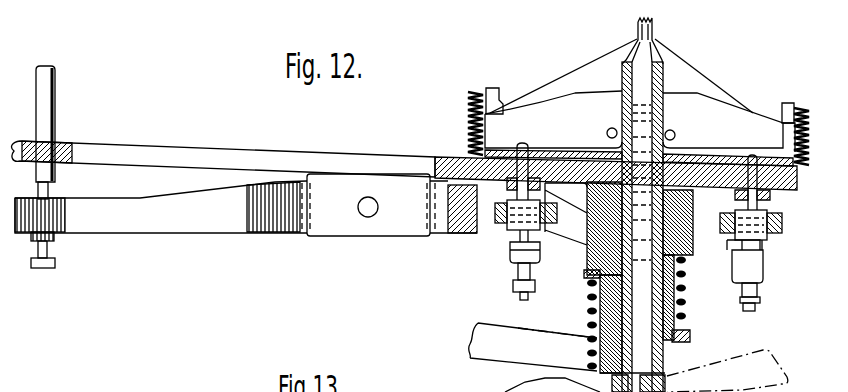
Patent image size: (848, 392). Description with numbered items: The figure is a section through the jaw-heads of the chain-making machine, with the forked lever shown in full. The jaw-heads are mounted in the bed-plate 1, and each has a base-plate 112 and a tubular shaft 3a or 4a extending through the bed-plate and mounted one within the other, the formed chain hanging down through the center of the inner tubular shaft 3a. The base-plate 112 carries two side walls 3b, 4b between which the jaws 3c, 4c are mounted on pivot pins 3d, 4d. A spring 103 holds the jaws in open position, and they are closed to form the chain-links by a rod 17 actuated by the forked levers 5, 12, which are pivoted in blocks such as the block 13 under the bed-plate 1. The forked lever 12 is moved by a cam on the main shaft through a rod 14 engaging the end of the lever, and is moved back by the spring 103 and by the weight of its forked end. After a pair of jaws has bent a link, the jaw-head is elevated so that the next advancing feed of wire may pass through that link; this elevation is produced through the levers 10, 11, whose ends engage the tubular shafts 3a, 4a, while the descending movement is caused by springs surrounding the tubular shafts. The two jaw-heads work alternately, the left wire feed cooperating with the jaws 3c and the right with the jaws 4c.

In FIG. 12, the bed-plate 1 is at (163, 151).
In FIG. 12, the rod 14 is at (47, 103).
In FIG. 12, the forked lever 12 is at (182, 225).
In FIG. 12, the block 13 is at (410, 237).
In FIG. 12, the base-plate 112 is at (468, 148).
In FIG. 12, the spring 103 is at (470, 113).
In FIG. 12, the rod 17 is at (503, 231).
In FIG. 12, the forked lever 5 is at (541, 254).
In FIG. 13, the forked lever 5 is at (505, 389).
In FIG. 12, the side wall 4b is at (568, 105).
In FIG. 12, the jaw 4c is at (709, 93).
In FIG. 12, the side wall 3b is at (664, 92).
In FIG. 12, the jaw 3c is at (643, 44).
In FIG. 12, the pivot pin 3d is at (664, 109).
In FIG. 12, the pivot pin 4d is at (676, 133).
In FIG. 12, the tubular shaft 4a is at (681, 313).
In FIG. 12, the tubular shaft 3a is at (658, 355).
In FIG. 12, the lever 11 is at (546, 346).
In FIG. 12, the lever 10 is at (755, 366).